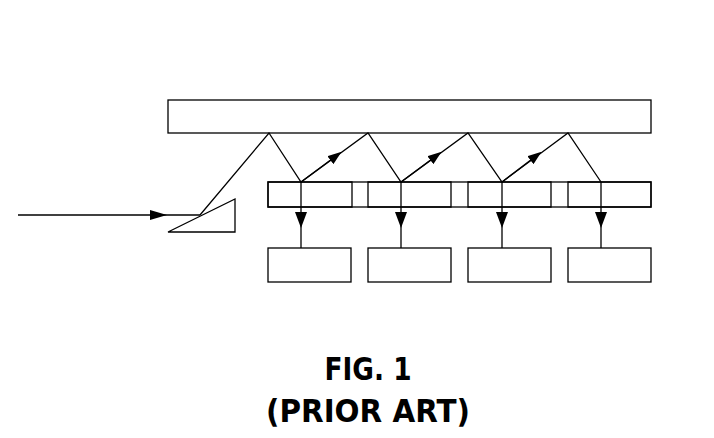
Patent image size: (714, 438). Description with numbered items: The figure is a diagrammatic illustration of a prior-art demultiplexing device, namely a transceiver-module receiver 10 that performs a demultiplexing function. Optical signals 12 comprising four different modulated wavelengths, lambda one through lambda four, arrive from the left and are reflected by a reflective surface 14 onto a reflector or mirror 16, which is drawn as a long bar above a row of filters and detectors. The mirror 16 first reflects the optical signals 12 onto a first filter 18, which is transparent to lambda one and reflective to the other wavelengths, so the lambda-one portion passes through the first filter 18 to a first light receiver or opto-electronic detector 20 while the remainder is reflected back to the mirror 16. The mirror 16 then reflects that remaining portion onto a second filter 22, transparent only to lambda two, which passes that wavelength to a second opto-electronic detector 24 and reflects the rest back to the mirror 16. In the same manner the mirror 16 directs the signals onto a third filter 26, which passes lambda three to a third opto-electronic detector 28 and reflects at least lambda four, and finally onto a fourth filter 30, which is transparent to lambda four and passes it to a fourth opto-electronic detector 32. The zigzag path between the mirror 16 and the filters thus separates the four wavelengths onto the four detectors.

The receiver 10 is at (74, 54).
The optical signals 12 is at (84, 218).
The reflective surface 14 is at (208, 234).
The mirror 16 is at (243, 99).
The first filter 18 is at (284, 208).
The first opto-electronic detector 20 is at (283, 283).
The second filter 22 is at (385, 208).
The second opto-electronic detector 24 is at (384, 283).
The third filter 26 is at (486, 208).
The third opto-electronic detector 28 is at (485, 283).
The fourth filter 30 is at (586, 208).
The fourth opto-electronic detector 32 is at (585, 283).